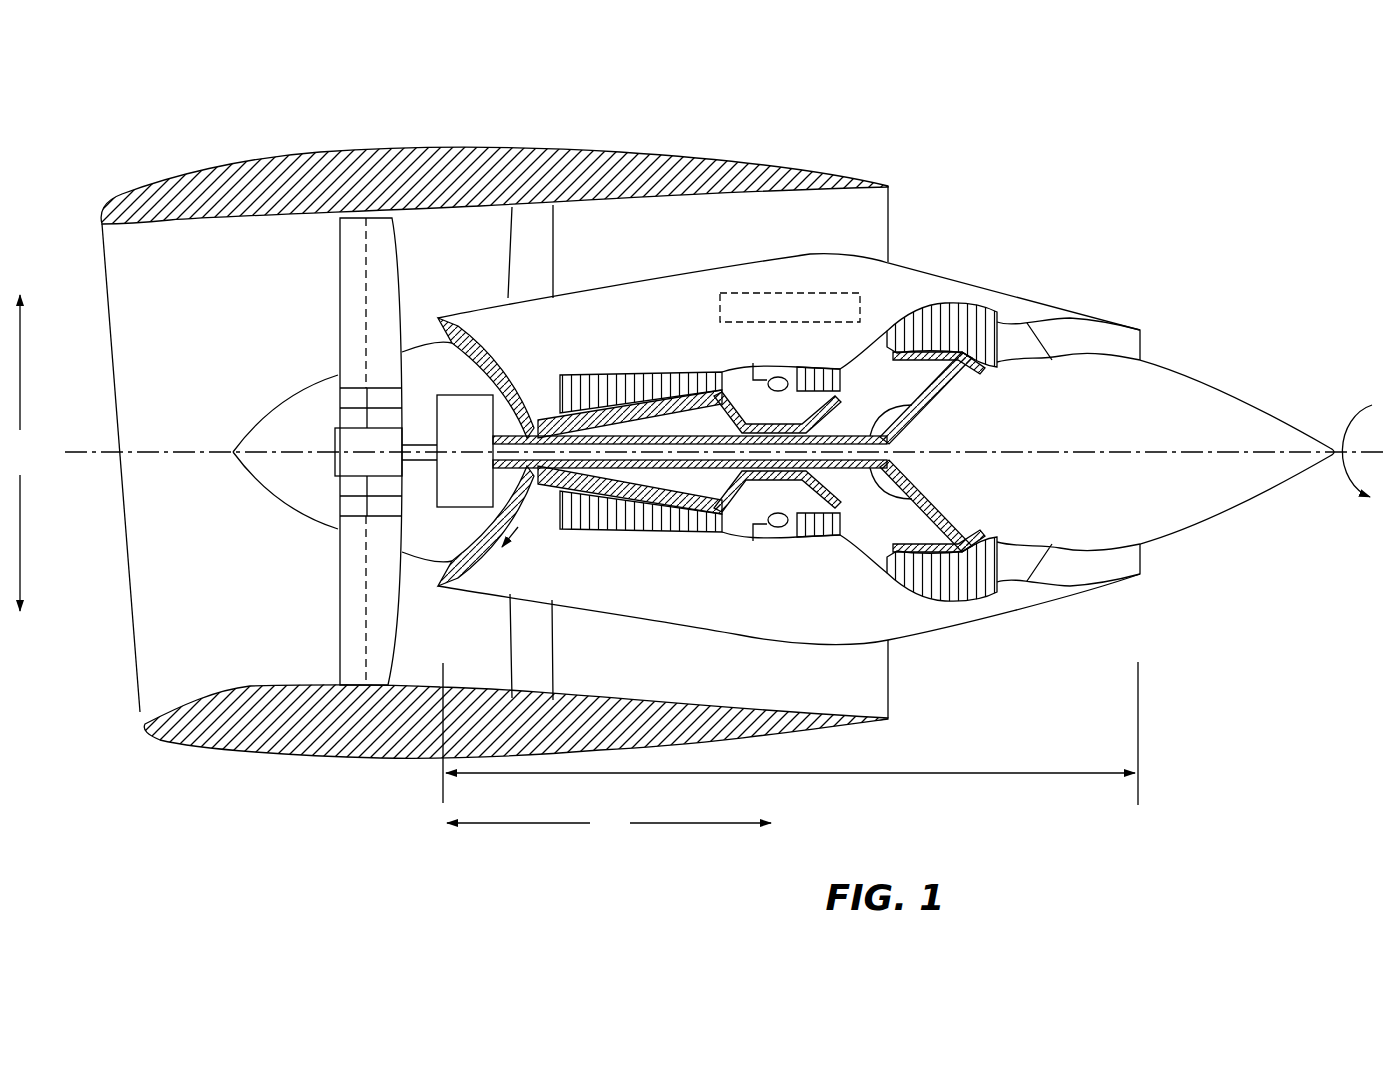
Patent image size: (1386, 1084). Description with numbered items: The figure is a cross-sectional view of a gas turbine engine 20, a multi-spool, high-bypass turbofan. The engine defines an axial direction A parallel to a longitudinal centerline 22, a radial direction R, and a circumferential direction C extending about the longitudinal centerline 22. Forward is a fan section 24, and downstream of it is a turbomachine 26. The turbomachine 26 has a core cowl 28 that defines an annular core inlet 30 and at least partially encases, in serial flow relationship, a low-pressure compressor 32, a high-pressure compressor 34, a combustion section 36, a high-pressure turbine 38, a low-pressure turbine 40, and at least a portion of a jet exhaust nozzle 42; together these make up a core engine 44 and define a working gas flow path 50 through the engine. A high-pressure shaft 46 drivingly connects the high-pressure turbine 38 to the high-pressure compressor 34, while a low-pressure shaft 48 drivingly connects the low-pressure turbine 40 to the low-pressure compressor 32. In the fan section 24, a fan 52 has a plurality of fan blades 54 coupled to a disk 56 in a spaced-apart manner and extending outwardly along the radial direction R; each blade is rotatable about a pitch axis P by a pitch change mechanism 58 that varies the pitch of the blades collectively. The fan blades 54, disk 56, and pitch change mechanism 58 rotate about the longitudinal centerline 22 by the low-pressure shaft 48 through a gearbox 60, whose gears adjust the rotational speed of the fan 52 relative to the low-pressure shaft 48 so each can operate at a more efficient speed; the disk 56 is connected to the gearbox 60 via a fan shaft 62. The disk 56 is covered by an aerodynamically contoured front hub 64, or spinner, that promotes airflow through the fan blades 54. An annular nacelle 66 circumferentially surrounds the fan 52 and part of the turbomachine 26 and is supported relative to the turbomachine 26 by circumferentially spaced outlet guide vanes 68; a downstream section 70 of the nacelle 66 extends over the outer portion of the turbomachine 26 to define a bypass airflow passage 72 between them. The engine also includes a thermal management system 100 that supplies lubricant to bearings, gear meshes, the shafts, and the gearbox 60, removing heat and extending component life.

The gas turbine engine 20 is at (1048, 166).
The longitudinal centerline 22 is at (1077, 449).
The fan section 24 is at (290, 240).
The turbomachine 26 is at (690, 330).
The core cowl 28 is at (726, 636).
The core inlet 30 is at (448, 566).
The low-pressure compressor 32 is at (512, 531).
The high-pressure compressor 34 is at (585, 511).
The combustion section 36 is at (776, 531).
The high-pressure turbine 38 is at (858, 533).
The low-pressure turbine 40 is at (972, 603).
The jet exhaust nozzle 42 is at (1047, 575).
The core engine 44 is at (910, 772).
The high-pressure shaft 46 is at (815, 403).
The low-pressure shaft 48 is at (903, 406).
The working gas flow path 50 is at (540, 517).
The fan 52 is at (326, 540).
The fan blades 54 is at (337, 618).
The disk 56 is at (358, 400).
The pitch change mechanism 58 is at (336, 440).
The gearbox 60 is at (522, 400).
The fan shaft 62 is at (411, 443).
The front hub 64 is at (257, 470).
The nacelle 66 is at (824, 172).
The outlet guide vanes 68 is at (553, 238).
The downstream section 70 is at (871, 708).
The bypass airflow passage 72 is at (721, 245).
The thermal management system 100 is at (838, 292).
The axial direction A is at (609, 823).
The radial direction R is at (21, 453).
The pitch axis P is at (372, 237).
The circumferential direction C is at (1353, 482).